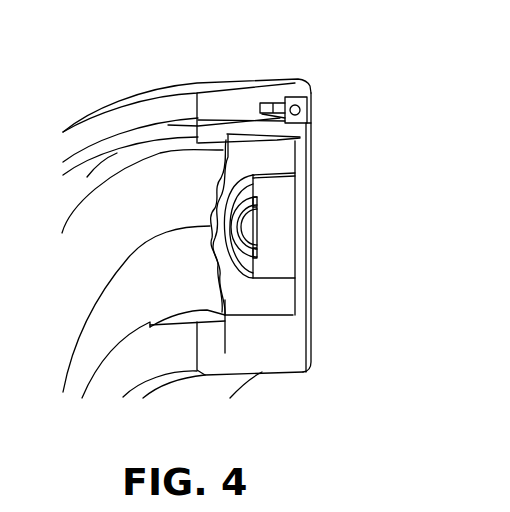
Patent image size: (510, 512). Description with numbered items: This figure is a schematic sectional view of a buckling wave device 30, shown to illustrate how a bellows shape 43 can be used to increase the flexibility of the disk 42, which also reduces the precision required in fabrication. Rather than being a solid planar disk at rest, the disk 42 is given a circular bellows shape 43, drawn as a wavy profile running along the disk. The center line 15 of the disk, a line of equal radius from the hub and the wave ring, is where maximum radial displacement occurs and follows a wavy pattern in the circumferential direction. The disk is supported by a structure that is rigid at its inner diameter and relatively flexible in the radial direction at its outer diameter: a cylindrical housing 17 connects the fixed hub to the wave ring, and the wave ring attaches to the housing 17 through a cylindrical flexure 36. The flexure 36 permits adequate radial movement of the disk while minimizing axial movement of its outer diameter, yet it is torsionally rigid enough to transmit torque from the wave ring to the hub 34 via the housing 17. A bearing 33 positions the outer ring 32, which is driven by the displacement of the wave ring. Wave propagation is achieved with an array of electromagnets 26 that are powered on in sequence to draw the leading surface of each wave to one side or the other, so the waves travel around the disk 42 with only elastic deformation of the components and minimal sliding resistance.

The buckling wave device 30 is at (92, 47).
The outer ring 32 is at (247, 93).
The bearing 33 is at (307, 107).
The cylindrical flexure 36 is at (270, 130).
The housing 17 is at (306, 181).
The electromagnets 26 is at (287, 236).
The hub 34 is at (270, 360).
The center line 15 is at (107, 287).
The disk 42 is at (142, 191).
The bellows shape 43 is at (211, 222).